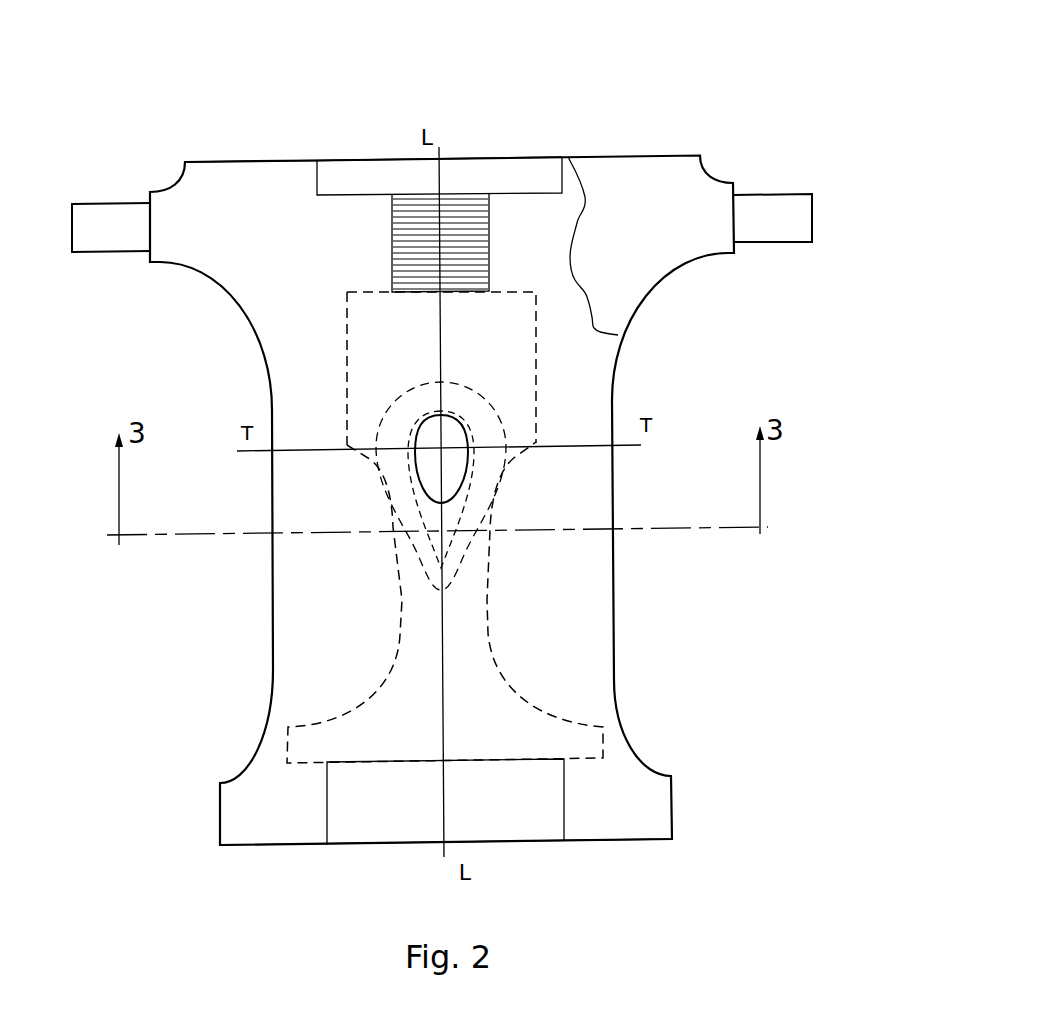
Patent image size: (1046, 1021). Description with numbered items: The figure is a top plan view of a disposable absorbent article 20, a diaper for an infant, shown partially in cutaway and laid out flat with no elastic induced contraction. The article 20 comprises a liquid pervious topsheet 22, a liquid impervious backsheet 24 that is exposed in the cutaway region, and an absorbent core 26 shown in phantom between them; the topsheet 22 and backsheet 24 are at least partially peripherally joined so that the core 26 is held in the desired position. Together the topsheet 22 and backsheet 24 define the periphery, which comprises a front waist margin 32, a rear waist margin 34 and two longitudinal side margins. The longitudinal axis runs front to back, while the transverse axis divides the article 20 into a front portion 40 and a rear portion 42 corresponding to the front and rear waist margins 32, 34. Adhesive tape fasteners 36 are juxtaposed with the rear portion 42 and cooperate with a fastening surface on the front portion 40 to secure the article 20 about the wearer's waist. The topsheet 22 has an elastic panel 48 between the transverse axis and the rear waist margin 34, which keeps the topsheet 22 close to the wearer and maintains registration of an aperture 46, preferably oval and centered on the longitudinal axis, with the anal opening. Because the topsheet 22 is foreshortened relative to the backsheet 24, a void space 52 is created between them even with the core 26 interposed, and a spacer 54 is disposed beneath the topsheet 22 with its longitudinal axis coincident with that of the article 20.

The disposable absorbent article 20 is at (177, 143).
The topsheet 22 is at (300, 190).
The backsheet 24 is at (618, 180).
The absorbent core 26 is at (378, 365).
The front waist margin 32 is at (332, 846).
The rear waist margin 34 is at (407, 158).
The adhesive tape fasteners 36 is at (123, 227).
The front portion 40 is at (394, 834).
The rear portion 42 is at (337, 154).
The aperture 46 is at (469, 435).
The elastic panel 48 is at (422, 237).
The void space 52 is at (455, 467).
The spacer 54 is at (390, 497).